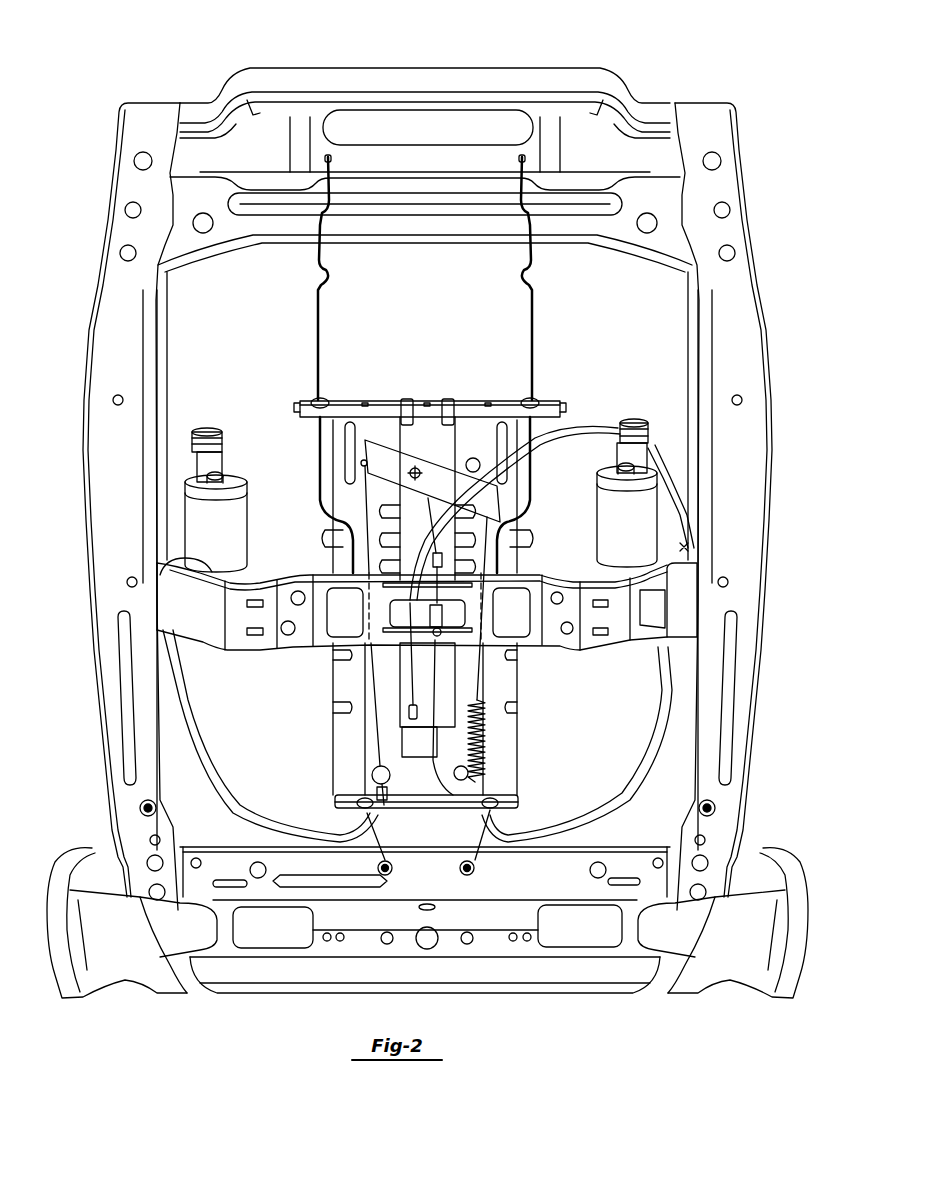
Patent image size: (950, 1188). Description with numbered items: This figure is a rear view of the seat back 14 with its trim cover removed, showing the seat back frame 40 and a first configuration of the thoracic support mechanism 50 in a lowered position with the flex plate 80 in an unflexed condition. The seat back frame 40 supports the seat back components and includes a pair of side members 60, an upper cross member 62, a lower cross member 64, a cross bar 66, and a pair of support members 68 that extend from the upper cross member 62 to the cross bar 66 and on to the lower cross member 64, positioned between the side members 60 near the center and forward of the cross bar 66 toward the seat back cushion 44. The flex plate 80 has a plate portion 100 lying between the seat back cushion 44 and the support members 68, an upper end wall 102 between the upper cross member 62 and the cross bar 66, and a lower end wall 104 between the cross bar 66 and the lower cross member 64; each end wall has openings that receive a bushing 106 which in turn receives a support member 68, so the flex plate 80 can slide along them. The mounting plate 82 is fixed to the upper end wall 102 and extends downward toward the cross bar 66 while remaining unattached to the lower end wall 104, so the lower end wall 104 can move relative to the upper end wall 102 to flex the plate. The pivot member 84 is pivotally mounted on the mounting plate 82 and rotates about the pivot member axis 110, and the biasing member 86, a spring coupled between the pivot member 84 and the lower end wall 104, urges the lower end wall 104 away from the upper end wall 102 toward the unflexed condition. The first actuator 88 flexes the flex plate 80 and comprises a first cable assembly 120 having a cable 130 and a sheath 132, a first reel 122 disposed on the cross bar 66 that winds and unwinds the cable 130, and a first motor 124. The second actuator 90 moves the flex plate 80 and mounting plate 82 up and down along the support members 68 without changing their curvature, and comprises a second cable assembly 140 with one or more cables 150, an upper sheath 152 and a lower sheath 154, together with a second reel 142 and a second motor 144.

The seat back 14 is at (427, 510).
The seat back frame 40 is at (425, 157).
The seat back cushion 44 is at (427, 561).
The thoracic support mechanism 50 is at (425, 583).
The side members 60 is at (427, 506).
The upper cross member 62 is at (425, 243).
The lower cross member 64 is at (425, 920).
The cross bar 66 is at (424, 578).
The support members 68 is at (425, 399).
The flex plate 80 is at (470, 622).
The plate portion 100 is at (427, 609).
The mounting plate 82 is at (425, 606).
The pivot member 84 is at (430, 470).
The biasing member 86 is at (514, 649).
The first actuator 88 is at (245, 500).
The second actuator 90 is at (612, 475).
The upper end wall 102 is at (430, 384).
The lower end wall 104 is at (393, 816).
The bushing 106 is at (428, 597).
The pivot member axis 110 is at (426, 449).
The first cable assembly 120 is at (274, 745).
The first reel 122 is at (155, 541).
The first motor 124 is at (216, 523).
The cable 130 is at (311, 635).
The sheath 132 is at (270, 736).
The second cable assembly 140 is at (552, 597).
The second reel 142 is at (709, 571).
The second motor 144 is at (627, 516).
The cables 150 is at (484, 646).
The upper sheath 152 is at (644, 413).
The lower sheath 154 is at (588, 643).